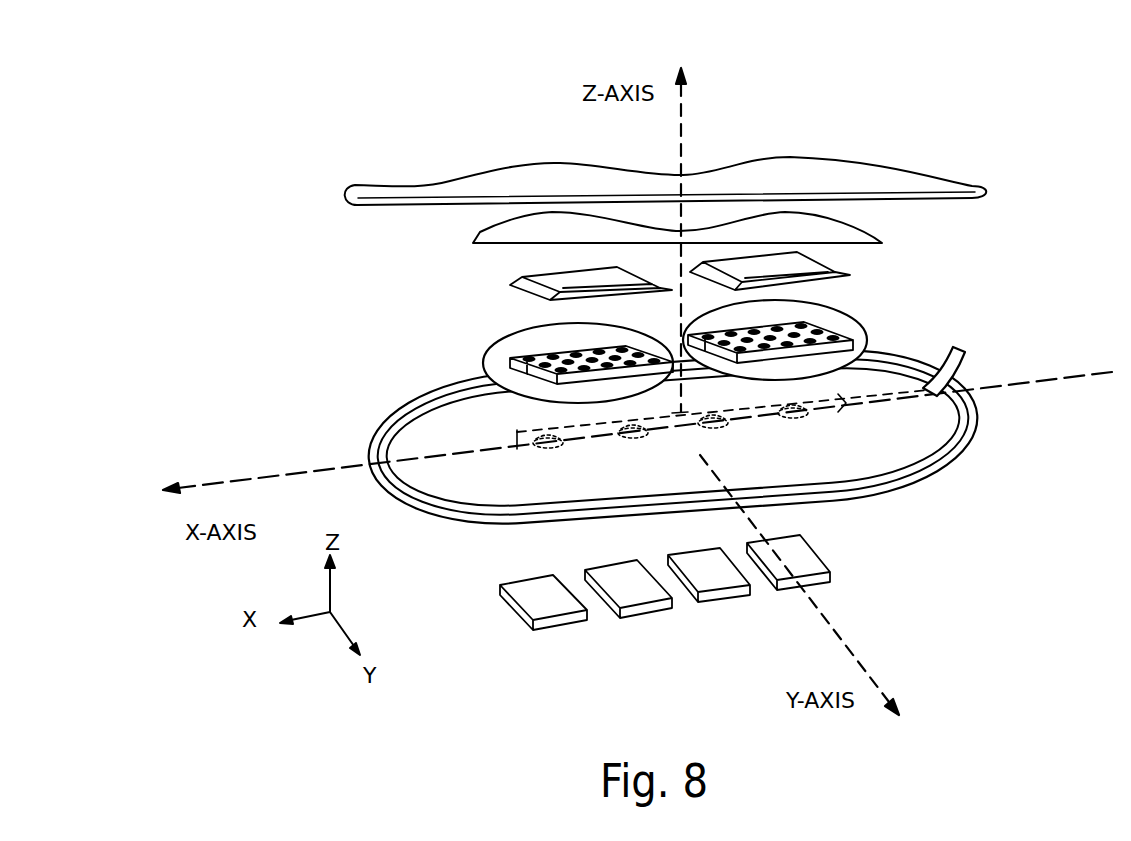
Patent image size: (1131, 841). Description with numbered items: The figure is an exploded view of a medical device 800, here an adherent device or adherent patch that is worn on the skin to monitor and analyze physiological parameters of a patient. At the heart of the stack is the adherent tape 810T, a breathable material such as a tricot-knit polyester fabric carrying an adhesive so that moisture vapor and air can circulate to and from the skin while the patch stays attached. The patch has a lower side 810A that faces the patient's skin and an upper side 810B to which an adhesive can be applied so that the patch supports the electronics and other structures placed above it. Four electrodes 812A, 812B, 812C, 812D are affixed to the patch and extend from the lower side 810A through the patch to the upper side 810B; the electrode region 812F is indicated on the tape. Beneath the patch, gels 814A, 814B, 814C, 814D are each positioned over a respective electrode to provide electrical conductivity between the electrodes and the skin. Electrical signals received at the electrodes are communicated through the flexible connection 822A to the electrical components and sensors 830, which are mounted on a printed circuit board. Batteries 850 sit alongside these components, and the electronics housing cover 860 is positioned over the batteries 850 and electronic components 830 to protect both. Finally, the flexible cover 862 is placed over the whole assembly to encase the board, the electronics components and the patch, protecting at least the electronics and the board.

The medical device 800 is at (792, 114).
The flexible cover 862 is at (437, 185).
The electronics housing cover 860 is at (475, 236).
The batteries 850 is at (510, 285).
The electrical components/sensors 830 is at (558, 335).
The flexible connection 822A is at (942, 342).
The lower side 810A is at (490, 530).
The upper side 810B is at (920, 457).
The adherent tape 810T is at (405, 490).
The sensor region 812F is at (514, 443).
The electrode 812A is at (553, 450).
The electrode 812B is at (633, 440).
The electrode 812C is at (719, 430).
The electrode 812D is at (797, 420).
The gel 814A is at (567, 627).
The gel 814B is at (648, 616).
The gel 814C is at (737, 603).
The gel 814D is at (832, 578).